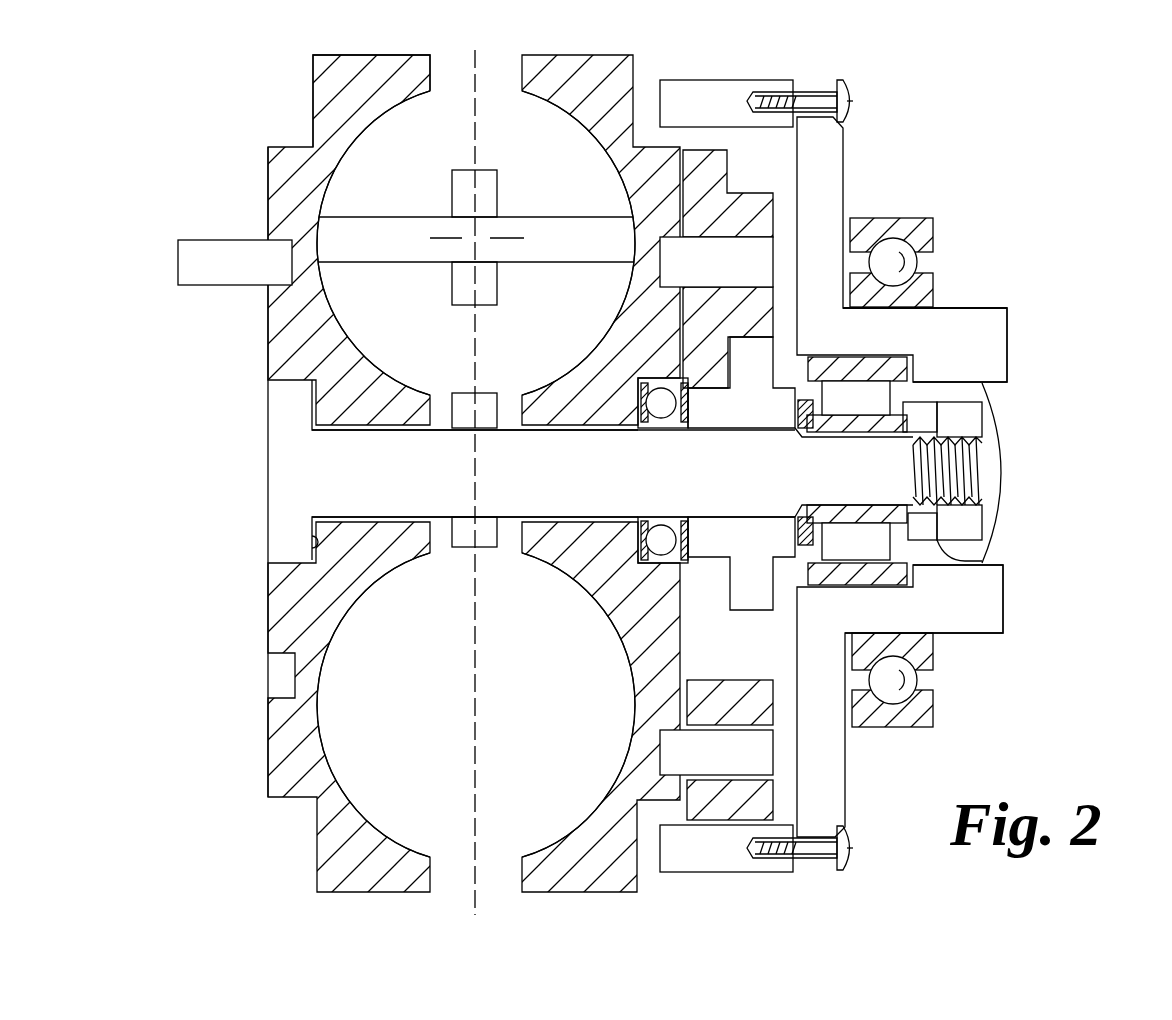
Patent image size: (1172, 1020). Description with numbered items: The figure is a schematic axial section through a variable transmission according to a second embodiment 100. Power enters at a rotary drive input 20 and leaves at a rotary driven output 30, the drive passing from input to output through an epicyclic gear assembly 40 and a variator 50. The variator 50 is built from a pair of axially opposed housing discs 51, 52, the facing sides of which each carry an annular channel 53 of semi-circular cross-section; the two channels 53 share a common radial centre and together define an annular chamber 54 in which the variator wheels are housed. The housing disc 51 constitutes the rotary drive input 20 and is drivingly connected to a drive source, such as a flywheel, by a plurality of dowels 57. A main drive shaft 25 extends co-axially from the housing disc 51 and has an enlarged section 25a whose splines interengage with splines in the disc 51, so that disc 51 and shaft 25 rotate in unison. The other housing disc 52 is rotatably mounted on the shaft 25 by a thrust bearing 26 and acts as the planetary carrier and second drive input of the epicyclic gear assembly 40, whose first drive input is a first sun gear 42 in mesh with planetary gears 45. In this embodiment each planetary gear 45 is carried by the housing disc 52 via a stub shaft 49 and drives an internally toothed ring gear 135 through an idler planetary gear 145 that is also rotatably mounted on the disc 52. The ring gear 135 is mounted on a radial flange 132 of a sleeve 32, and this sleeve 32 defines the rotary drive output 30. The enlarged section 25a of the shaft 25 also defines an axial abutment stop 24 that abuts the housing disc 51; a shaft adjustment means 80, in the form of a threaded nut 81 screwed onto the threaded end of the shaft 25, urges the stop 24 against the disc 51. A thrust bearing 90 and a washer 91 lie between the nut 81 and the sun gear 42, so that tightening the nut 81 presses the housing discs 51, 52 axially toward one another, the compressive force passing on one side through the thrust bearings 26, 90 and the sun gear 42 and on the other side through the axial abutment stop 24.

The second embodiment 100 is at (178, 192).
The rotary drive input 20 is at (250, 395).
The axial abutment stop 24 is at (317, 542).
The main drive shaft 25 is at (340, 463).
The enlarged section 25a is at (285, 527).
The thrust bearing 26 is at (650, 575).
The rotary driven output 30 is at (1011, 268).
The sleeve 32 is at (958, 313).
The epicyclic gear assembly 40 is at (906, 128).
The first sun gear 42 is at (755, 615).
The planetary gear 45 is at (713, 167).
The stub shaft 49 is at (702, 281).
The variator 50 is at (266, 136).
The housing disc 51 is at (323, 90).
The housing disc 52 is at (625, 78).
The annular channel 53 is at (373, 115).
The annular chamber 54 is at (352, 298).
The dowel 57 is at (214, 280).
The shaft adjustment means 80 is at (985, 433).
The threaded nut 81 is at (963, 522).
The thrust bearing 90 is at (898, 552).
The washer 91 is at (927, 528).
The radial flange 132 is at (828, 178).
The ring gear 135 is at (732, 93).
The idler planetary gear 145 is at (748, 688).